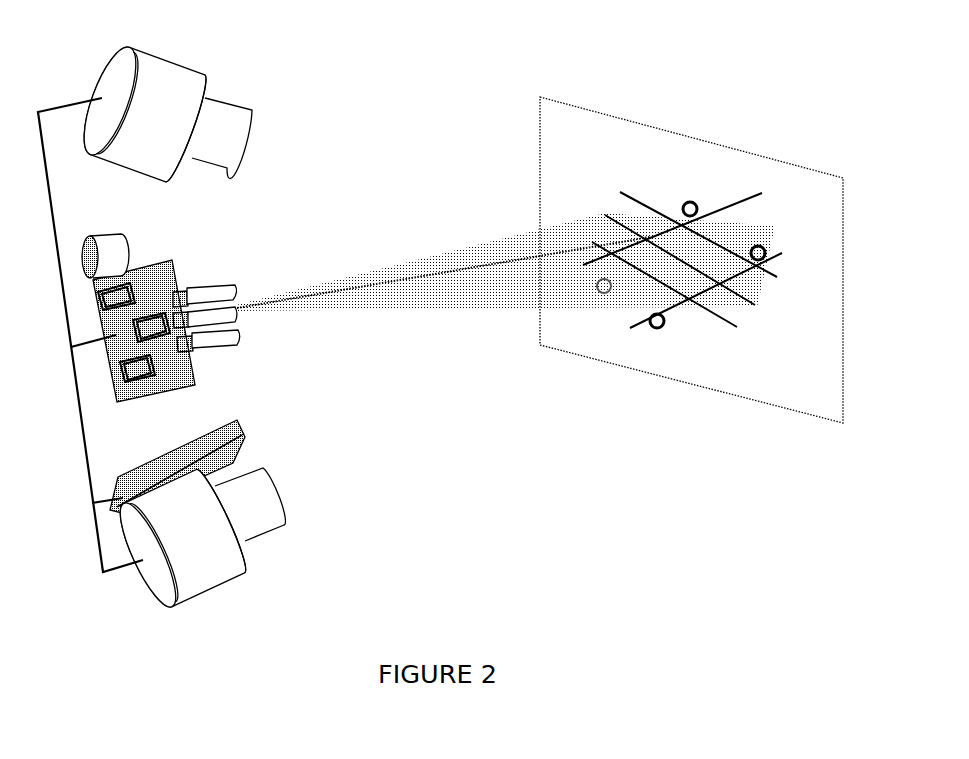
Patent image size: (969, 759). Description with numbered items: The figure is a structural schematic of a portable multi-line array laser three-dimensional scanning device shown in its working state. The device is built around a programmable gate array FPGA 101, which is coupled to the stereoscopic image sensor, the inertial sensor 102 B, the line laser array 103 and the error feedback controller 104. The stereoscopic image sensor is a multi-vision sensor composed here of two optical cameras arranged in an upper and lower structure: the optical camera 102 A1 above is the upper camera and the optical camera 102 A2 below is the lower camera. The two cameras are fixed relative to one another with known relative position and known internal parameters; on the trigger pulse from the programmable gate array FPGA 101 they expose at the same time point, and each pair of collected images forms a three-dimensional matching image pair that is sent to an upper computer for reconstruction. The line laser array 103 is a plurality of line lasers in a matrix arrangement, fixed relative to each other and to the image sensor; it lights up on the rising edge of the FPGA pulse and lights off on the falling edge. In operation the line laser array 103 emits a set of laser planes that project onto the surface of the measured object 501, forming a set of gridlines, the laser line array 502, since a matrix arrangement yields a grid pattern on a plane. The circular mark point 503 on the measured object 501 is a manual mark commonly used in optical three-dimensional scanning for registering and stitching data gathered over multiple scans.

The programmable gate array FPGA 101 is at (203, 372).
The optical camera 102 A1 is at (204, 76).
The optical camera 102 A2 is at (253, 547).
The inertial sensor 102 B is at (230, 450).
The line laser array 103 is at (235, 286).
The error feedback controller 104 is at (127, 242).
The measured object 501 is at (593, 120).
The laser line array 502 is at (738, 325).
The circular mark point 503 is at (703, 205).